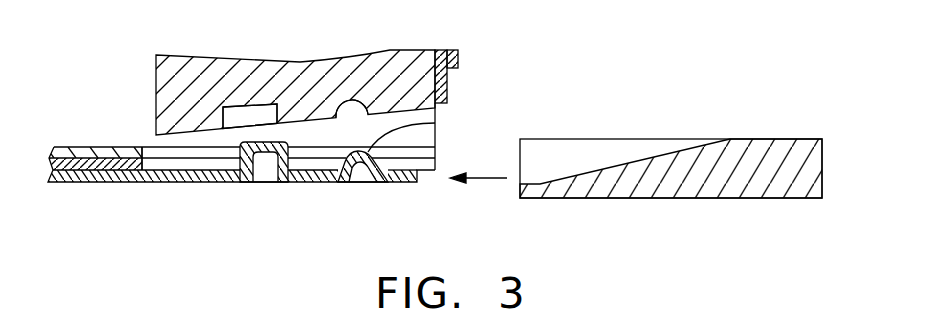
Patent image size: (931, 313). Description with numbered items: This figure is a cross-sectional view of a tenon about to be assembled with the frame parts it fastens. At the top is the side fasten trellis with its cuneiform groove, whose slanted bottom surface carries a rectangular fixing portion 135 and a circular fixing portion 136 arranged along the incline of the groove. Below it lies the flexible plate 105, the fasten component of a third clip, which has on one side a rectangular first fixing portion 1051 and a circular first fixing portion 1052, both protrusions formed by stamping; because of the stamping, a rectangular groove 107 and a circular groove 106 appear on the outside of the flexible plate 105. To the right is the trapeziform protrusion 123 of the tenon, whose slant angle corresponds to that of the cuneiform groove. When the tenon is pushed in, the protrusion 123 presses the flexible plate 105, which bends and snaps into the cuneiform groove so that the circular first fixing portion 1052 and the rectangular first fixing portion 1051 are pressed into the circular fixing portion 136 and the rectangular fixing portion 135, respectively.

The flexible plate 105 is at (404, 184).
The rectangular first fixing portion 1051 is at (240, 147).
The circular first fixing portion 1052 is at (435, 122).
The circular groove 106 is at (357, 173).
The rectangular groove 107 is at (262, 170).
The protrusion 123 is at (673, 173).
The rectangular fixing portion 135 is at (247, 115).
The circular fixing portion 136 is at (348, 108).